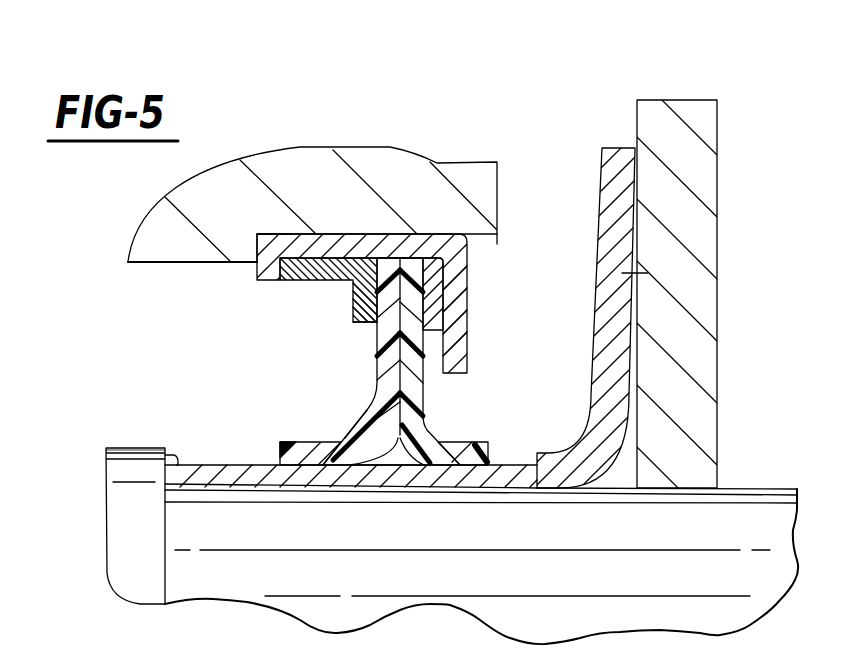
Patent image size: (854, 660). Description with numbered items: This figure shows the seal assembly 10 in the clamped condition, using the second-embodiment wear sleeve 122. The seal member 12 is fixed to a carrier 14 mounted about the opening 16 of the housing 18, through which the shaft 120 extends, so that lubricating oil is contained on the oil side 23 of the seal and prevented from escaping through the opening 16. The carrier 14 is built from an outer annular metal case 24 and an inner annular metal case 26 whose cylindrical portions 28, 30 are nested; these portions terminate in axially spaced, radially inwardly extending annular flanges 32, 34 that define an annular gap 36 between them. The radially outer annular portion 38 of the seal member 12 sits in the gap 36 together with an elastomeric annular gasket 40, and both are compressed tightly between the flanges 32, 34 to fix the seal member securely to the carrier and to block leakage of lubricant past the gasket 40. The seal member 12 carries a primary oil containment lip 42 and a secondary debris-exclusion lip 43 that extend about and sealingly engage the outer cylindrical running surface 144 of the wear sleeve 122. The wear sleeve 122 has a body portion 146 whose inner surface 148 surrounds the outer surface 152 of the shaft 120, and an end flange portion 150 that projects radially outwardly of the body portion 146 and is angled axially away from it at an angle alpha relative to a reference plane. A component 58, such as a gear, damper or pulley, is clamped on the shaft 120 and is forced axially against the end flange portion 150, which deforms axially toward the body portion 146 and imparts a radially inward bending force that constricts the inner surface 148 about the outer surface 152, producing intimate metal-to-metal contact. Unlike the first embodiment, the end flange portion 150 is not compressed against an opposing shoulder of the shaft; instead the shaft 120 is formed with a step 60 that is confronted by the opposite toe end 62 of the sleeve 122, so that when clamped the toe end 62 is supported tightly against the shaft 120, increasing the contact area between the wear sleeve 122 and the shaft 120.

The seal assembly 10 is at (538, 113).
The seal member 12 is at (339, 405).
The carrier 14 is at (264, 220).
The opening 16 is at (497, 244).
The housing 18 is at (405, 163).
The oil side 23 is at (262, 268).
The outer annular metal case 24 is at (378, 250).
The inner annular metal case 26 is at (352, 298).
The cylindrical portion 28 is at (318, 242).
The cylindrical portion 30 is at (296, 278).
The annular flange 32 is at (467, 270).
The annular flange 34 is at (363, 322).
The annular gap 36 is at (440, 342).
The radially outer annular portion 38 is at (413, 240).
The elastomeric annular gasket 40 is at (433, 310).
The primary oil containment lip 42 is at (303, 454).
The secondary debris-exclusion lip 43 is at (458, 448).
The component 58 is at (703, 177).
The step 60 is at (178, 505).
The toe end 62 is at (165, 466).
The shaft 120 is at (758, 488).
The wear sleeve 122 is at (609, 134).
The outer cylindrical running surface 144 is at (204, 465).
The body portion 146 is at (338, 477).
The inner surface 148 is at (236, 486).
The end flange portion 150 is at (648, 273).
The outer surface 152 is at (178, 456).